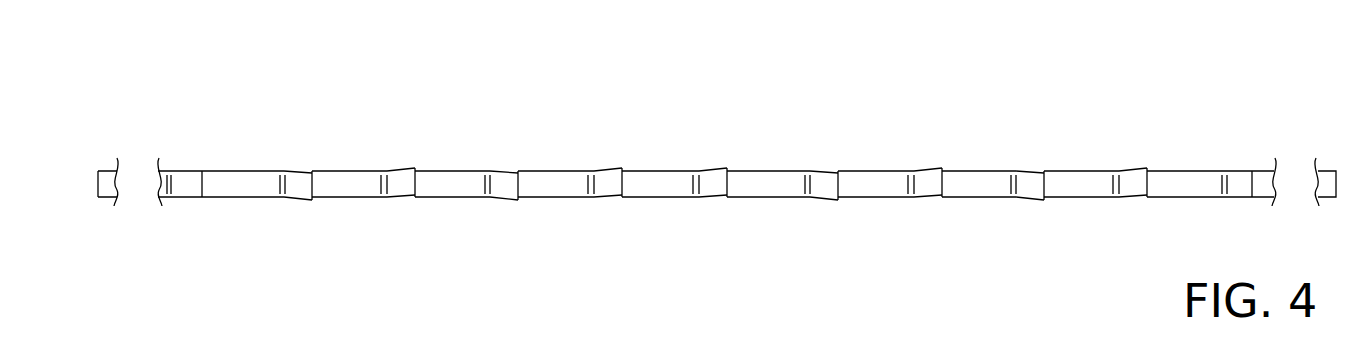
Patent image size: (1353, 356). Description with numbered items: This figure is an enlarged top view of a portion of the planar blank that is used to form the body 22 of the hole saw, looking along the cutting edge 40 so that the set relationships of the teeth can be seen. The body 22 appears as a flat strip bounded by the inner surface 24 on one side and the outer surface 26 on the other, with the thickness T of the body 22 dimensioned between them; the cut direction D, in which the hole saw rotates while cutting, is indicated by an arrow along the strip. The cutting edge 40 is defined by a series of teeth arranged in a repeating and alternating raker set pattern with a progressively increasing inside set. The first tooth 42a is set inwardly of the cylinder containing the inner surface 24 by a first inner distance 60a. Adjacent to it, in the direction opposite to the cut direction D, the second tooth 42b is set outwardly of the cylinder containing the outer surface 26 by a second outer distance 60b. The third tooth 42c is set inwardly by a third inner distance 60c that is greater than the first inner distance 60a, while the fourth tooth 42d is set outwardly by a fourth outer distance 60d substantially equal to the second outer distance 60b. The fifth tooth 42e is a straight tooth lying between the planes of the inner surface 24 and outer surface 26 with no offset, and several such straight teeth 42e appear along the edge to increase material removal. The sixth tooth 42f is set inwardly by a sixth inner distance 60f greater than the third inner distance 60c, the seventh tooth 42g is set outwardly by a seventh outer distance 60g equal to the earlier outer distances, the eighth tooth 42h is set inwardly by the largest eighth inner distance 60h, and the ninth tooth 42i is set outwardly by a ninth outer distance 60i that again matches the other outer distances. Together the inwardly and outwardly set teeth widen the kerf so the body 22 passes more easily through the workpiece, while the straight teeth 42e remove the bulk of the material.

The body 22 is at (1182, 210).
The inner surface 24 is at (215, 170).
The outer surface 26 is at (211, 200).
The cutting edge 40 is at (762, 160).
The first tooth 42a is at (1130, 178).
The second tooth 42b is at (1032, 182).
The third tooth 42c is at (930, 180).
The fourth tooth 42d is at (823, 187).
The fifth tooth 42e is at (186, 186).
The sixth tooth 42f is at (605, 179).
The seventh tooth 42g is at (505, 188).
The eighth tooth 42h is at (398, 182).
The ninth tooth 42i is at (291, 182).
The first inner distance 60a is at (1152, 160).
The second outer distance 60b is at (1044, 212).
The third inner distance 60c is at (944, 160).
The fourth outer distance 60d is at (837, 212).
The sixth inner distance 60f is at (624, 160).
The seventh outer distance 60g is at (517, 212).
The eighth inner distance 60h is at (417, 160).
The ninth outer distance 60i is at (310, 212).
The thickness T is at (183, 115).
The cut direction D is at (447, 268).